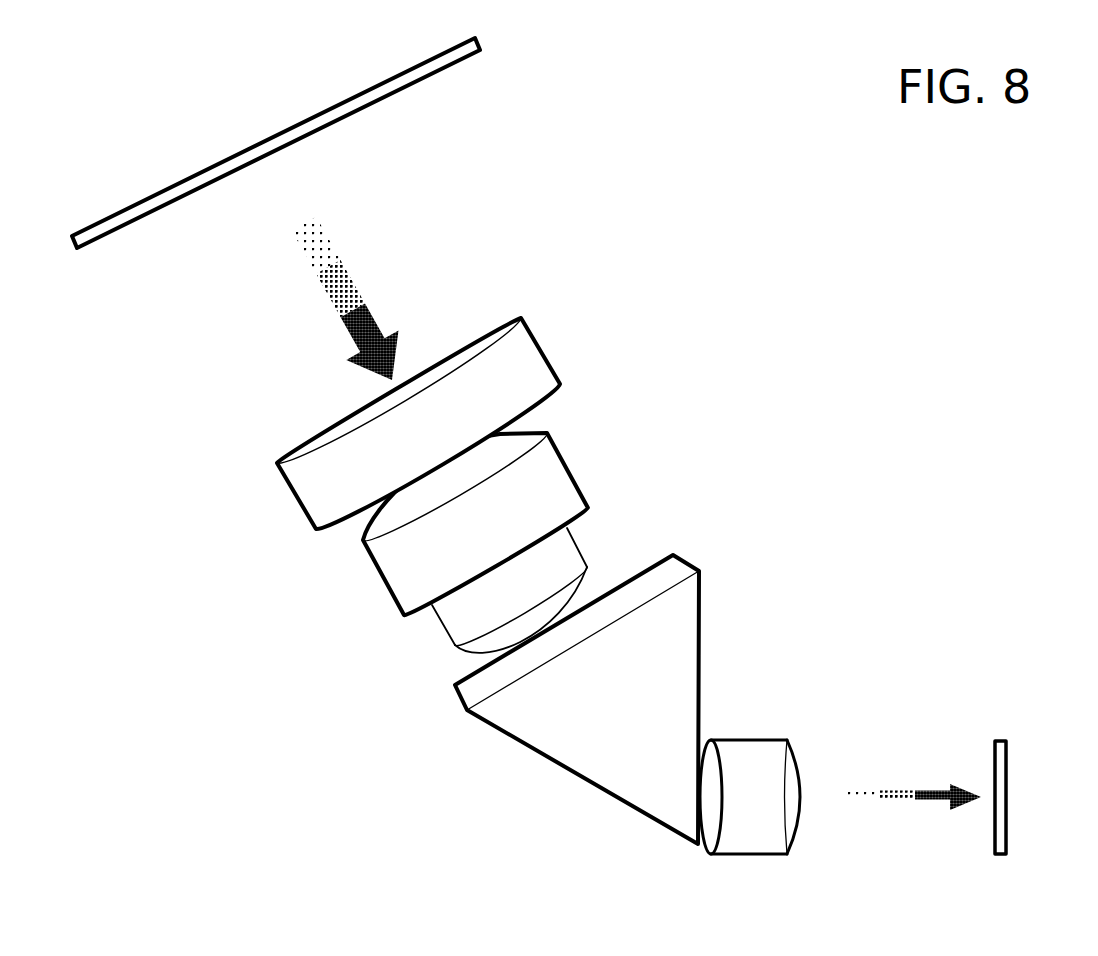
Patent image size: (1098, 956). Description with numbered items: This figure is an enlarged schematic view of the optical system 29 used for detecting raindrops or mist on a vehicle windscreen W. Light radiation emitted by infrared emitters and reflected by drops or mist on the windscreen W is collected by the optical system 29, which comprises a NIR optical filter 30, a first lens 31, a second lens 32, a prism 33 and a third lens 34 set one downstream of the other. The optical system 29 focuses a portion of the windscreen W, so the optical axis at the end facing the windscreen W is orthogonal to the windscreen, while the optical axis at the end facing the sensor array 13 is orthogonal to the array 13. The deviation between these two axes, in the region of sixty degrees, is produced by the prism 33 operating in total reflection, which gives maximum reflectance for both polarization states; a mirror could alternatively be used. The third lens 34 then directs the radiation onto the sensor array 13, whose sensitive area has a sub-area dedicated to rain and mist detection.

The windscreen W is at (110, 239).
The optical system 29 is at (599, 530).
The NIR optical filter 30 is at (300, 497).
The first lens 31 is at (397, 572).
The second lens 32 is at (460, 615).
The prism 33 is at (563, 740).
The third lens 34 is at (757, 760).
The sensor array 13 is at (1005, 755).